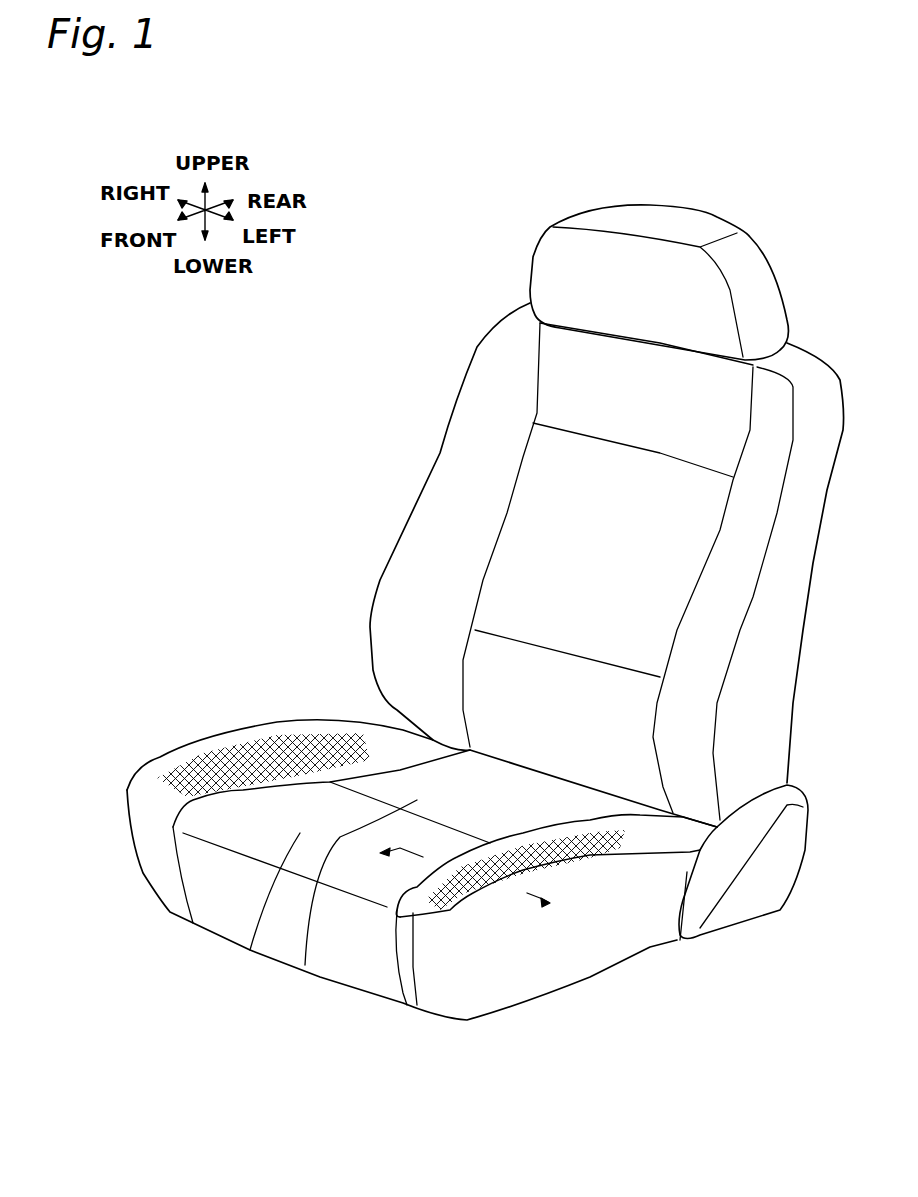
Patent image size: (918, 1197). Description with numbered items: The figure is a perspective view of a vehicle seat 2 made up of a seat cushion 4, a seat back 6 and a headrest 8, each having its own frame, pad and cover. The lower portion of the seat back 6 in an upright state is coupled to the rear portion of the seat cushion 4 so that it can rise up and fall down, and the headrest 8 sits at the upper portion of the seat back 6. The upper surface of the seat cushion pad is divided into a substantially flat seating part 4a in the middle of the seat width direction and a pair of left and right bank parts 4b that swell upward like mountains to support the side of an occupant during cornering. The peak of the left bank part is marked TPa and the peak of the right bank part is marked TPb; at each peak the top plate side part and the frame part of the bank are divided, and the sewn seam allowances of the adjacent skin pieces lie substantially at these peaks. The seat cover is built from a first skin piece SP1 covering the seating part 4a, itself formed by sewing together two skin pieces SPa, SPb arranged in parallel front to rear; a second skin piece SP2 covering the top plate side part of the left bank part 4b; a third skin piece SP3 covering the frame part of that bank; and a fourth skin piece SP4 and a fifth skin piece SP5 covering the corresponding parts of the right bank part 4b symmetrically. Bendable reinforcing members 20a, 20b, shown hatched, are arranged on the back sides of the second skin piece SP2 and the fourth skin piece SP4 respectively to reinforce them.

The vehicle seat 2 is at (733, 177).
The headrest 8 is at (530, 272).
The seat back 6 is at (440, 450).
The seat cushion 4 is at (275, 717).
The seating part 4a is at (476, 794).
The bank part 4b is at (521, 790).
The left reinforcing member 20a is at (630, 867).
The right reinforcing member 20b is at (260, 733).
The peak of the left bank part TPa is at (457, 913).
The peak of the right bank part TPb is at (230, 727).
The first skin piece SP1 is at (320, 1020).
The second skin piece SP2 is at (417, 1005).
The third skin piece SP3 is at (563, 950).
The fourth skin piece SP4 is at (163, 750).
The fifth skin piece SP5 is at (123, 820).
The skin piece SPa is at (305, 965).
The skin piece SPb is at (250, 950).